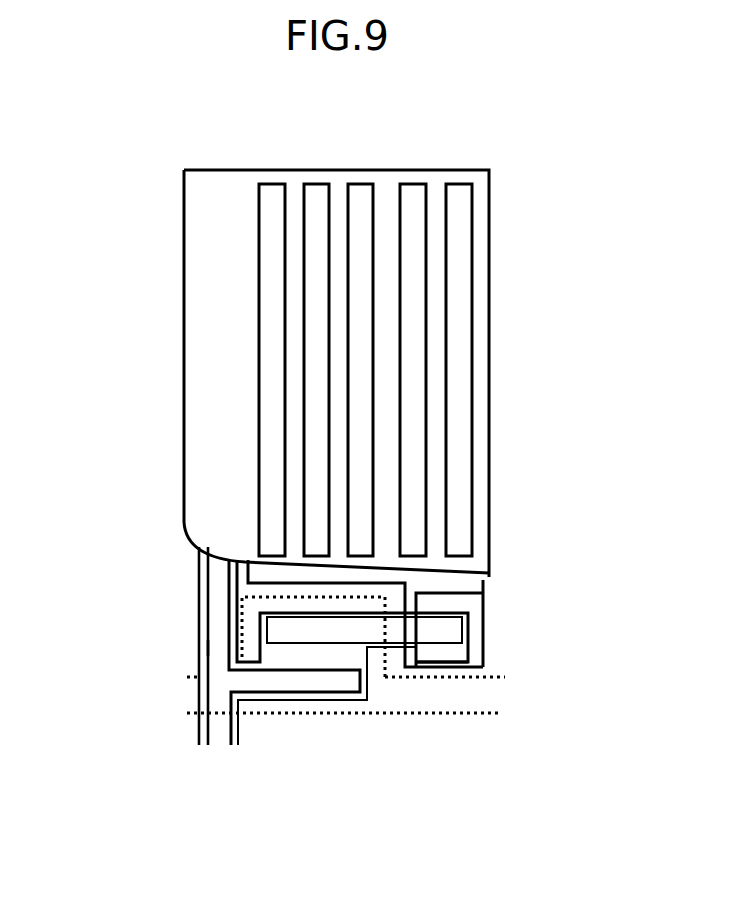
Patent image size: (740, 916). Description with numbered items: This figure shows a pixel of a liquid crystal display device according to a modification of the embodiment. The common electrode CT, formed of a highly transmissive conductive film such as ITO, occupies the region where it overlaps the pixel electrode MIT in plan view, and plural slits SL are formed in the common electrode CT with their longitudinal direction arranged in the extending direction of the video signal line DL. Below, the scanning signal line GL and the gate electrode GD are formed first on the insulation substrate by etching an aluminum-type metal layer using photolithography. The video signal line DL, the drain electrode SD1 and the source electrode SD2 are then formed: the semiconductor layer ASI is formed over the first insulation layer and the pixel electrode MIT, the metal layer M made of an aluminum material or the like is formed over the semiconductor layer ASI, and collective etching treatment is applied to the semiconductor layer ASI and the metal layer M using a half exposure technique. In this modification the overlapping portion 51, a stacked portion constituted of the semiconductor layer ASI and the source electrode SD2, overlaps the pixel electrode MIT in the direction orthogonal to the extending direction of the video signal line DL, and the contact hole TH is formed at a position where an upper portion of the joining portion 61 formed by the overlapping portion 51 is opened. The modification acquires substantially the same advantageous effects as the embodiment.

The common electrode CT is at (490, 187).
The slit SL is at (272, 183).
The video signal line DL is at (213, 683).
The metal layer M is at (210, 647).
The pixel electrode MIT is at (430, 583).
The source electrode SD2 is at (295, 633).
The contact hole TH is at (468, 591).
The joining portion 61 is at (450, 633).
The overlapping portion 51 is at (432, 655).
The semiconductor layer ASI is at (297, 690).
The drain electrode SD1 is at (259, 674).
The gate electrode GD is at (372, 667).
The scanning signal line GL is at (468, 697).